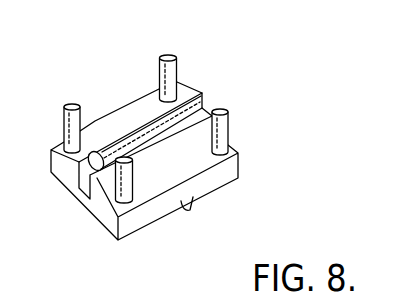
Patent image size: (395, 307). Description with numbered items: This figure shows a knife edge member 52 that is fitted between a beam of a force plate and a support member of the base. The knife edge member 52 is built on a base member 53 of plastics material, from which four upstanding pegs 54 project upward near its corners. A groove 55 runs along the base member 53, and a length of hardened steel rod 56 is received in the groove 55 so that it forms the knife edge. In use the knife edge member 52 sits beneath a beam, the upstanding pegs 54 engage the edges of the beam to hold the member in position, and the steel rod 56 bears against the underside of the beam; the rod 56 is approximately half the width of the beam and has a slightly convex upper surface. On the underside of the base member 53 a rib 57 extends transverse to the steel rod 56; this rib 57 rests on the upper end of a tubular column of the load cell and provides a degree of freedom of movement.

The knife edge member 52 is at (175, 135).
The base member 53 is at (227, 167).
The upstanding pegs 54 is at (67, 106).
The groove 55 is at (79, 164).
The hardened steel rod 56 is at (157, 120).
The rib 57 is at (187, 211).